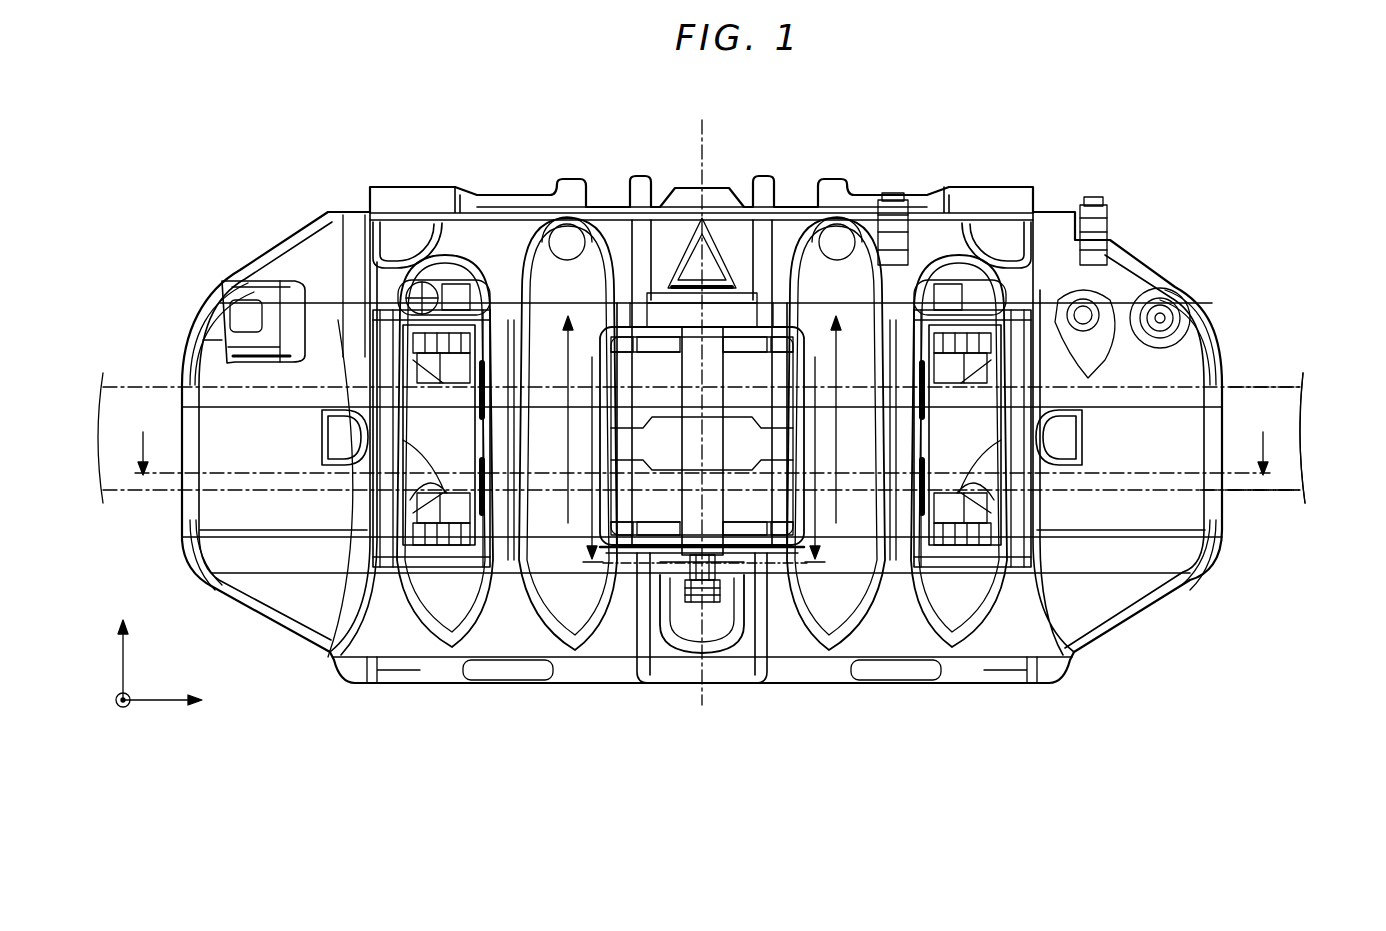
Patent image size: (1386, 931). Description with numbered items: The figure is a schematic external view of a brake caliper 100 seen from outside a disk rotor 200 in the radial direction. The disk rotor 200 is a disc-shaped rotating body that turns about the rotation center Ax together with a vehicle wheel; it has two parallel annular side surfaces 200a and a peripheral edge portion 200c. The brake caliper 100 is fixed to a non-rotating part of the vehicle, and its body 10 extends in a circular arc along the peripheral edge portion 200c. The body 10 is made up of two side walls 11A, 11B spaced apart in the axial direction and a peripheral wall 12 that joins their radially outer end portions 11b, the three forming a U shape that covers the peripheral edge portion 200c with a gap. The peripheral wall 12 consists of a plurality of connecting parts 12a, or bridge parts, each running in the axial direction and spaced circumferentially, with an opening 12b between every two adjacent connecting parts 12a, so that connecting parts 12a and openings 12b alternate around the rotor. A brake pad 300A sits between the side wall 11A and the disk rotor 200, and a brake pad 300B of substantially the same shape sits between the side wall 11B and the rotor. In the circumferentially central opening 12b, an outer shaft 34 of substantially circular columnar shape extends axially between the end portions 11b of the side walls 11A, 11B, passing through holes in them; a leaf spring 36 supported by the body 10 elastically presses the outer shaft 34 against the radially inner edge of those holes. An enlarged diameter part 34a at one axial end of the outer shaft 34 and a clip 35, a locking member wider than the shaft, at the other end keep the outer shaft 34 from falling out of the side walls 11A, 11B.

The brake caliper 100 is at (1062, 130).
The body 10 is at (1163, 267).
The peripheral wall 12 is at (284, 289).
The connecting part 12a is at (327, 357).
The opening 12b is at (417, 503).
The side wall 11A is at (793, 627).
The side wall 11B is at (780, 240).
The end portion 11b is at (665, 317).
The outer shaft 34 is at (677, 372).
The enlarged diameter part 34a is at (773, 417).
The clip 35 is at (697, 625).
The leaf spring 36 is at (892, 200).
The brake pad 300A is at (935, 525).
The brake pad 300B is at (940, 350).
The disk rotor 200 is at (1302, 418).
The side surface 200a is at (1250, 387).
The peripheral edge portion 200c is at (1280, 395).